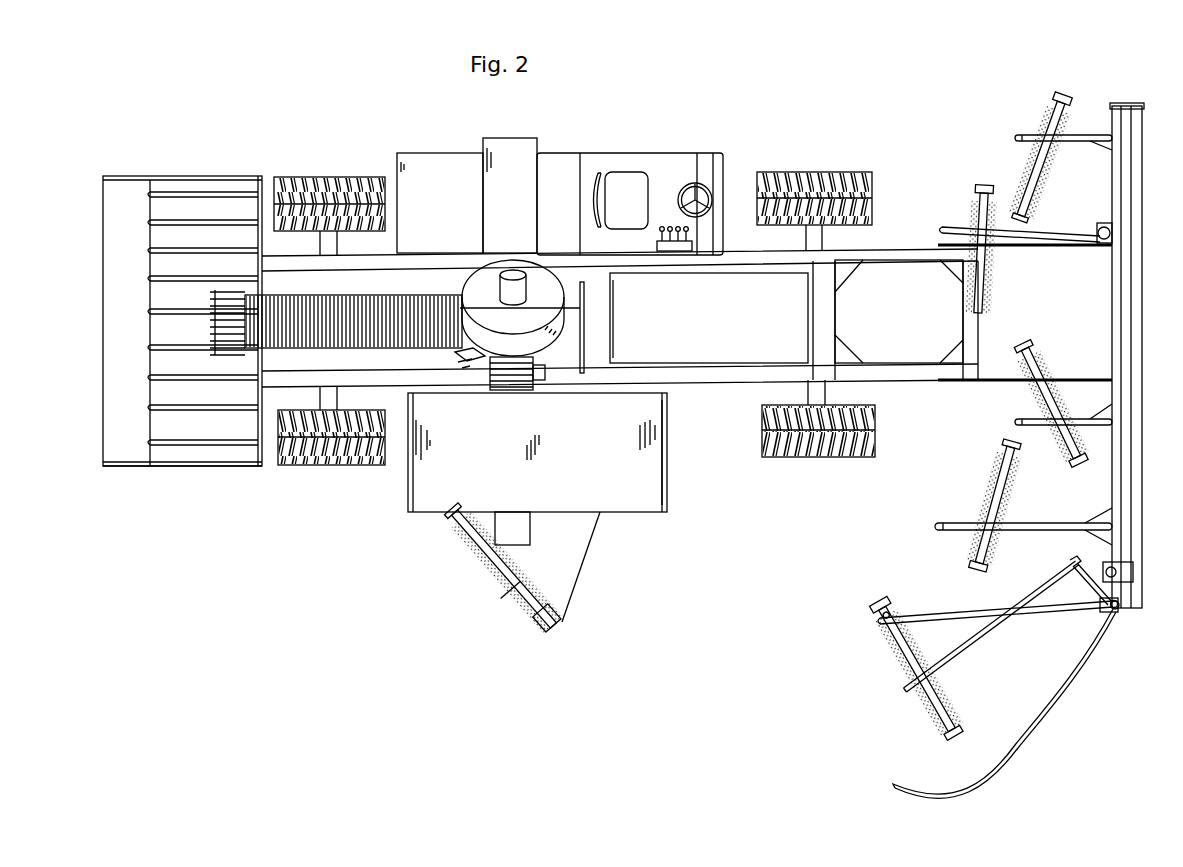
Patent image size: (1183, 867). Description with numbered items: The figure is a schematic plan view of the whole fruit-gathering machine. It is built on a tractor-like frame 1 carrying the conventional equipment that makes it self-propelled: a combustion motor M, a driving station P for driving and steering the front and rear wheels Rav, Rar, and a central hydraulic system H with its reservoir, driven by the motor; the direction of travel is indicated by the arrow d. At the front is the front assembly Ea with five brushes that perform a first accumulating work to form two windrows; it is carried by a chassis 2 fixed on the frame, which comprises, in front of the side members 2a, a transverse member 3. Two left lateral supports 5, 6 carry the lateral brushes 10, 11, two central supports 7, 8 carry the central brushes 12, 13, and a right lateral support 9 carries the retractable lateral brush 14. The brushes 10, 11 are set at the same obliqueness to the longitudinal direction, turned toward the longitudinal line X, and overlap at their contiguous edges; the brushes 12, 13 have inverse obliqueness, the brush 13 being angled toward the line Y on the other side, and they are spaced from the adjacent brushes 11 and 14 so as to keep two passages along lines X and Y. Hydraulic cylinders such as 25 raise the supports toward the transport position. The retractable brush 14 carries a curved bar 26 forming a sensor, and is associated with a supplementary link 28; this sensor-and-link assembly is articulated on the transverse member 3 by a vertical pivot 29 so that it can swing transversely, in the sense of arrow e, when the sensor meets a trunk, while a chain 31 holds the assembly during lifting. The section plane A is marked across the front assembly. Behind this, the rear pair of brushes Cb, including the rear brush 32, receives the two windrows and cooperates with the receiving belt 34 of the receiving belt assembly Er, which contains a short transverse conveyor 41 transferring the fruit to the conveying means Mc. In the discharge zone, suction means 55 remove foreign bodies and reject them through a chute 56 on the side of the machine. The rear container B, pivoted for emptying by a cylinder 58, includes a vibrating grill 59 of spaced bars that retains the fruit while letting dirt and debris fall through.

The frame 1 is at (704, 376).
The chassis 2 is at (906, 264).
The side members 2a is at (1030, 247).
The transverse member 3 is at (1124, 392).
The left lateral support 5 is at (1101, 145).
The left lateral support 6 is at (1068, 233).
The central support 7 is at (1087, 426).
The central support 8 is at (1064, 522).
The right lateral support 9 is at (1008, 616).
The lateral brush 10 is at (1042, 118).
The lateral brush 11 is at (967, 212).
The central brush 12 is at (1035, 395).
The central brush 13 is at (995, 470).
The retractable lateral brush 14 is at (883, 650).
The hydraulic cylinder 25 is at (1140, 588).
The curved bar 26 is at (1091, 662).
The supplementary link 28 is at (1000, 622).
The vertical pivot 29 is at (1116, 612).
The chain 31 is at (1072, 720).
The rear brush 32 is at (469, 545).
The receiving belt 34 is at (656, 478).
The transverse conveyor 41 is at (520, 388).
The suction means 55 is at (484, 283).
The chute 56 is at (521, 146).
The cylinder 58 is at (253, 463).
The vibrating grill 59 is at (236, 294).
The rear container B is at (214, 196).
The rear wheels Rar is at (345, 186).
The front wheels Rav is at (812, 182).
The combustion motor M is at (441, 175).
The driving station P is at (625, 189).
The central hydraulic system H is at (704, 320).
The conveying means Mc is at (434, 358).
The receiving belt assembly Er is at (614, 497).
The rear pair of brushes Cb is at (470, 578).
The front assembly Ea is at (1093, 103).
The longitudinal line X is at (880, 330).
The line Y is at (805, 582).
The section plane A is at (994, 160).
The direction of travel d is at (840, 124).
The direction of pivoting e is at (1000, 692).